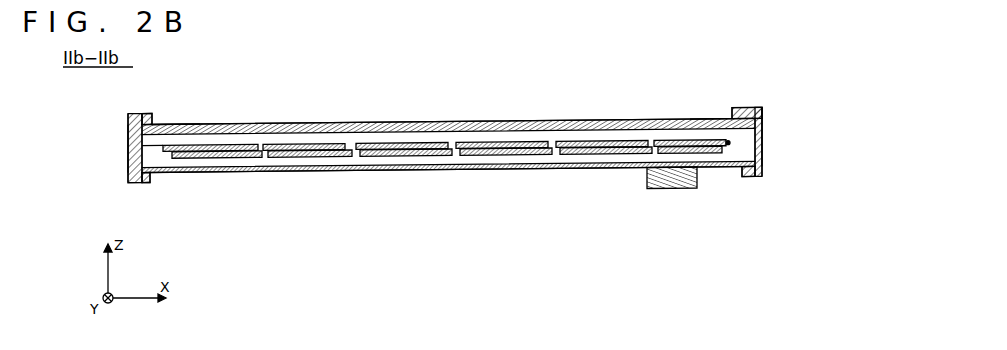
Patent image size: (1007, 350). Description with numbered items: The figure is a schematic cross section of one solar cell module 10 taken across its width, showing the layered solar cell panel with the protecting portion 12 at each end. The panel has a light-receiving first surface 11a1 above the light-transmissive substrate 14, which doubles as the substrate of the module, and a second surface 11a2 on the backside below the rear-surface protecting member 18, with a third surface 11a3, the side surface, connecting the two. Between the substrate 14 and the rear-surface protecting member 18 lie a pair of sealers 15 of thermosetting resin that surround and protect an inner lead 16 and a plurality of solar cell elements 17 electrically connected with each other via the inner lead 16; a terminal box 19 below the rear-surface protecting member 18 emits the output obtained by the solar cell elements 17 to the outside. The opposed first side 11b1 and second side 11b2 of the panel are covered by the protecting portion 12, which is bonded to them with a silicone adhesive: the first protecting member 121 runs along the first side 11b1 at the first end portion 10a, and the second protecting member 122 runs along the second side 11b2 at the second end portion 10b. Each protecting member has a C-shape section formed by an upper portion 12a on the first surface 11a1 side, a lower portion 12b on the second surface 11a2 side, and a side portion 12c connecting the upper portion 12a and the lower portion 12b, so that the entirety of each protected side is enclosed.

The solar cell module 10 is at (522, 198).
The first end portion 10a is at (762, 149).
The second end portion 10b is at (127, 181).
The first surface 11a1 is at (277, 122).
The second surface 11a2 is at (378, 175).
The third surface 11a3 is at (146, 149).
The first side 11b1 is at (703, 118).
The second side 11b2 is at (178, 122).
The protecting portion 12 is at (445, 124).
The first protecting member 121 is at (732, 111).
The second protecting member 122 is at (160, 121).
The upper portion 12a is at (143, 115).
The lower portion 12b is at (138, 184).
The side portion 12c is at (125, 128).
The light-transmissive substrate 14 is at (326, 122).
The sealers 15 is at (387, 142).
The inner lead 16 is at (460, 146).
The solar cell elements 17 is at (511, 147).
The rear-surface protecting member 18 is at (311, 173).
The terminal box 19 is at (655, 189).